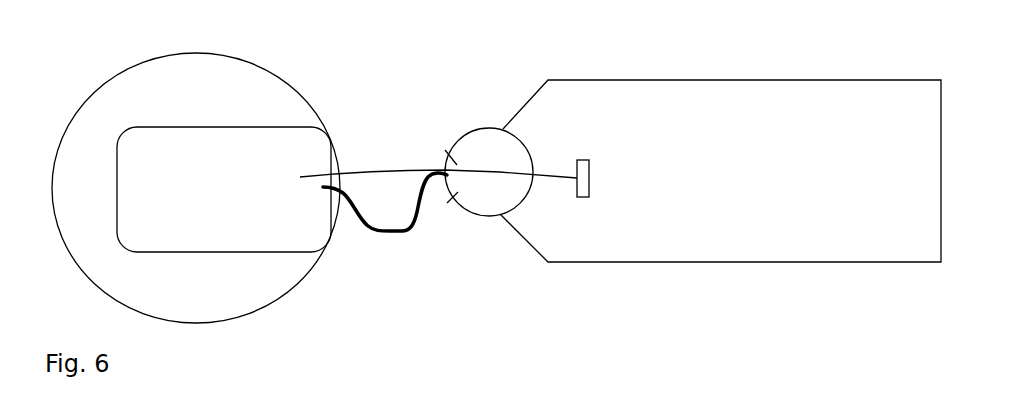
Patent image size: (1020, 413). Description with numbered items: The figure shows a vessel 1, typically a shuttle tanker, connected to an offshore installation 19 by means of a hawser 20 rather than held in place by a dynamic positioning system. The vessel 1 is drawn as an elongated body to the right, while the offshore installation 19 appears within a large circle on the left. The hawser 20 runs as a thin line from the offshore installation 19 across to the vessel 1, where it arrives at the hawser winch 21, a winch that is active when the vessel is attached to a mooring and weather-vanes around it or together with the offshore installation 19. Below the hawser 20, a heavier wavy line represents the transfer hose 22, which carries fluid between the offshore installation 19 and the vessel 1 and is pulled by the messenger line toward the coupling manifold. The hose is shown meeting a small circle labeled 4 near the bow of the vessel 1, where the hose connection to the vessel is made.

The vessel 1 is at (720, 171).
The pivot / joint 4 is at (489, 172).
The offshore installation 19 is at (224, 189).
The hawser 20 is at (403, 160).
The hawser winch 21 is at (578, 150).
The transfer hose 22 is at (385, 202).